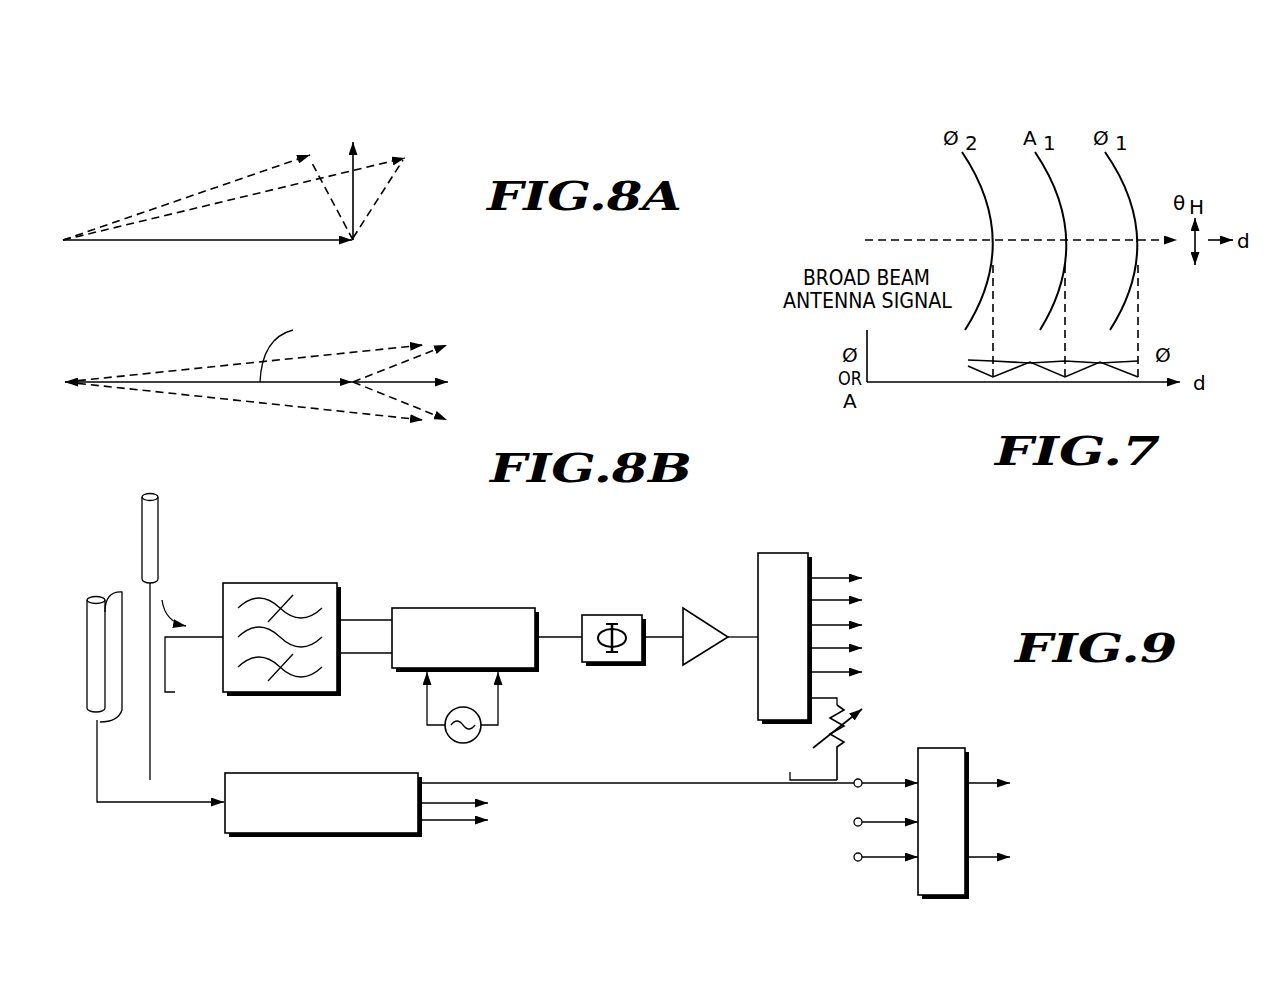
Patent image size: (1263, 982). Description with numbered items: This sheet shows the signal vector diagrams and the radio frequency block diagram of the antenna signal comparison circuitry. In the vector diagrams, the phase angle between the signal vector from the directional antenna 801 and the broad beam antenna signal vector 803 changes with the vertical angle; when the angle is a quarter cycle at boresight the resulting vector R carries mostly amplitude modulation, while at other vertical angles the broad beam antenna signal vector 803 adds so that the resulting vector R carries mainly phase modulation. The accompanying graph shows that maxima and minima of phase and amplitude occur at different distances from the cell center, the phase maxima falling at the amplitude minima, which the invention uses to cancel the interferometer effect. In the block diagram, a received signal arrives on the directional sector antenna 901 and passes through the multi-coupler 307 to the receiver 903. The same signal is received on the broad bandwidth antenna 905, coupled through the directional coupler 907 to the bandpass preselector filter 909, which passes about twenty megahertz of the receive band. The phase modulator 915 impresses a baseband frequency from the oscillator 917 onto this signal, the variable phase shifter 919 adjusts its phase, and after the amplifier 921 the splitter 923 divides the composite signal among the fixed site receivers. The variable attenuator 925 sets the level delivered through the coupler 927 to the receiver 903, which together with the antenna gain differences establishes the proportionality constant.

In FIG. 8A, the directional antenna signal vector 801 is at (293, 241).
In FIG. 8B, the directional antenna signal vector 801 is at (288, 385).
In FIG. 8A, the broad beam antenna signal vector 803 is at (355, 207).
In FIG. 8B, the broad beam antenna signal vector 803 is at (410, 383).
In FIG. 9, the multi-coupler 307 is at (313, 773).
In FIG. 9, the directional sector antenna 901 is at (98, 597).
In FIG. 9, the receiver 903 is at (940, 748).
In FIG. 9, the broad bandwidth antenna 905 is at (157, 537).
In FIG. 9, the directional coupler 907 is at (167, 665).
In FIG. 9, the bandpass preselector filter 909 is at (283, 583).
In FIG. 9, the phase modulator 915 is at (463, 608).
In FIG. 9, the oscillator 917 is at (466, 743).
In FIG. 9, the variable phase shifter 919 is at (612, 615).
In FIG. 9, the amplifier 921 is at (698, 617).
In FIG. 9, the splitter 923 is at (783, 553).
In FIG. 9, the variable attenuator 925 is at (850, 706).
In FIG. 9, the coupler 927 is at (810, 778).